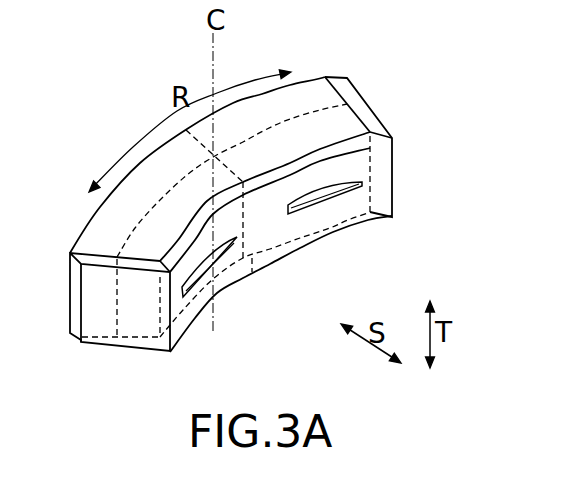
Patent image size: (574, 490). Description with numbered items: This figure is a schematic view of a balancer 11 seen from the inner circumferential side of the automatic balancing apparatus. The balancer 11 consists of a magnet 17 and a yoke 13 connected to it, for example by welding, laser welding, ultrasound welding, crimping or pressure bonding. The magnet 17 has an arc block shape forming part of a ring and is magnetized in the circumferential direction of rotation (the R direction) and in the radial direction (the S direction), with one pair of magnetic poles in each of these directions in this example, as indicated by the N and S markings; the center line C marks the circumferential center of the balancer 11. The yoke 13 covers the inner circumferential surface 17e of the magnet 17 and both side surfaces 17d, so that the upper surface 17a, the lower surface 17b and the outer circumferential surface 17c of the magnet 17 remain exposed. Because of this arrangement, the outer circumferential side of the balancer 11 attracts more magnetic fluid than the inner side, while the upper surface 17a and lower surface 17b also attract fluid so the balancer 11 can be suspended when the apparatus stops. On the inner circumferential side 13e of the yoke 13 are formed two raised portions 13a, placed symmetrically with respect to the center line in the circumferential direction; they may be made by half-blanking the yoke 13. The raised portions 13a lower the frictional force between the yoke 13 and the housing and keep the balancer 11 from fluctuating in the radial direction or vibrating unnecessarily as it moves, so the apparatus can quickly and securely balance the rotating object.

The balancer 11 is at (139, 85).
The yoke 13 is at (347, 78).
The raised portion 13a is at (194, 282).
The inner circumferential side of the yoke 13e is at (304, 188).
The magnet 17 is at (322, 77).
The upper surface 17a is at (141, 182).
The lower surface 17b is at (253, 264).
The outer circumferential surface 17c is at (70, 283).
The side surfaces 17d is at (107, 320).
The inner circumferential surface 17e is at (273, 226).